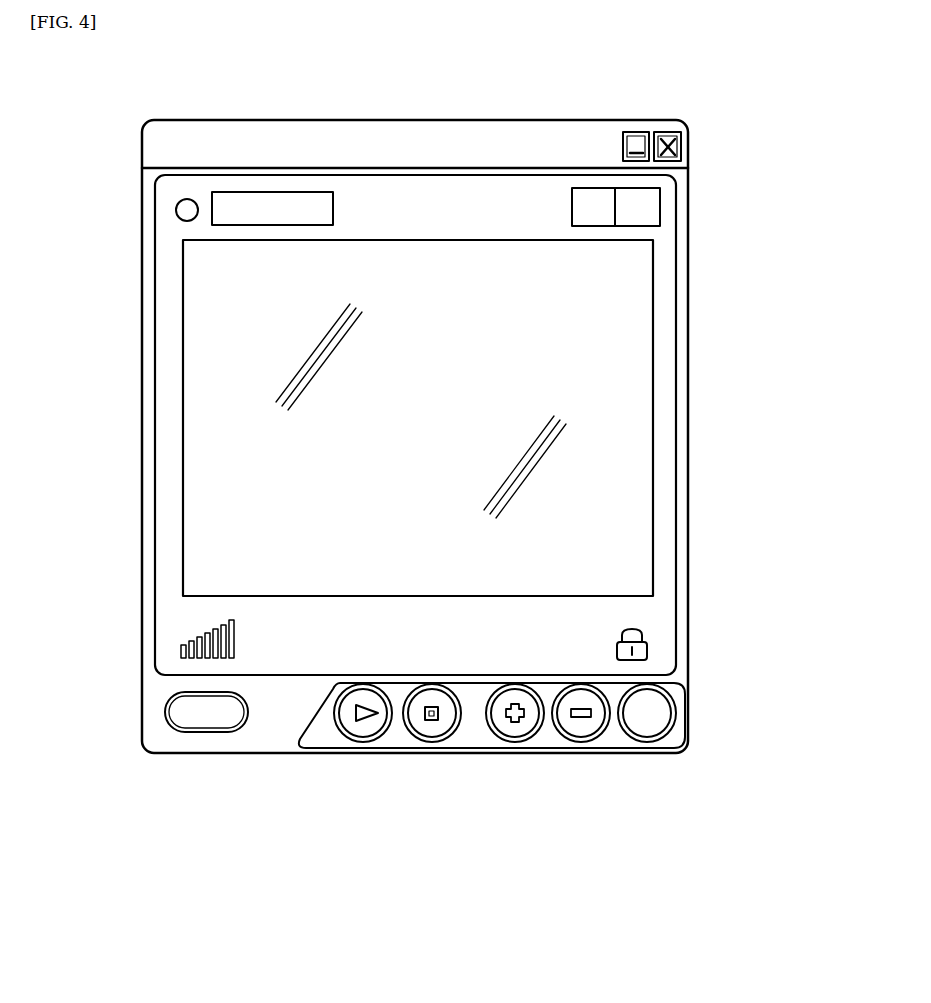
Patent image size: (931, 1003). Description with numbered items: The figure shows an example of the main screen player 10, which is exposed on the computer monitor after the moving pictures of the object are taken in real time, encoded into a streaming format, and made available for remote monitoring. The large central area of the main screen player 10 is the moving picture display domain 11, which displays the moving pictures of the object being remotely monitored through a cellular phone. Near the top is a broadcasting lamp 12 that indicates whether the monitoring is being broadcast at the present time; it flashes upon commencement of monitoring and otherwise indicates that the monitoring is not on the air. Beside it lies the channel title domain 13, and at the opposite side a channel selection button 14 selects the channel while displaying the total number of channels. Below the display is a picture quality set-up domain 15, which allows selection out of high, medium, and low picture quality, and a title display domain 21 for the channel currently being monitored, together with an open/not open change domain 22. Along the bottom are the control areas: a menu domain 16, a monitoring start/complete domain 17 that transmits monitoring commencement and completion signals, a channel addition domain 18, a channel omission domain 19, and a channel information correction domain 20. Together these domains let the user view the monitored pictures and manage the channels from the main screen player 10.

The main screen player 10 is at (692, 610).
The moving picture display domain 11 is at (623, 433).
The broadcasting lamp 12 is at (185, 210).
The channel title domain 13 is at (247, 210).
The channel selection button 14 is at (660, 207).
The picture quality set-up domain 15 is at (181, 652).
The menu domain 16 is at (197, 730).
The monitoring start/complete domain 17 is at (432, 737).
The channel addition domain 18 is at (511, 735).
The channel omission domain 19 is at (582, 735).
The channel information correction domain 20 is at (648, 736).
The title display domain 21 is at (548, 642).
The open/not open change domain 22 is at (647, 653).